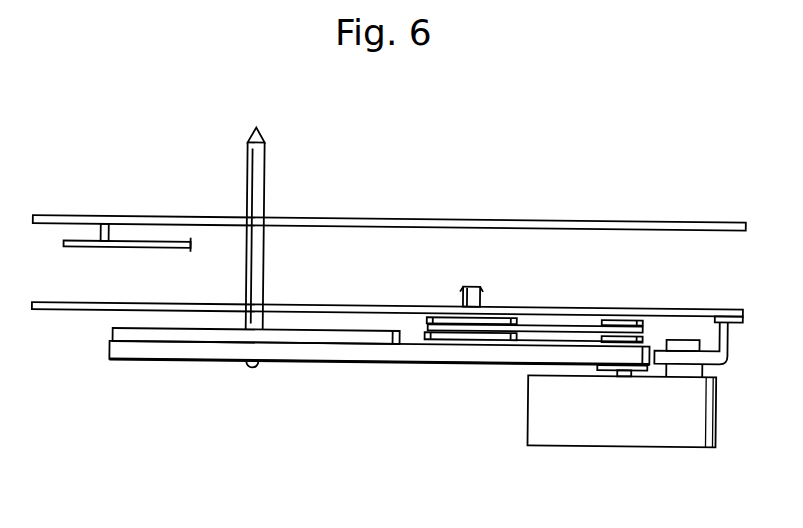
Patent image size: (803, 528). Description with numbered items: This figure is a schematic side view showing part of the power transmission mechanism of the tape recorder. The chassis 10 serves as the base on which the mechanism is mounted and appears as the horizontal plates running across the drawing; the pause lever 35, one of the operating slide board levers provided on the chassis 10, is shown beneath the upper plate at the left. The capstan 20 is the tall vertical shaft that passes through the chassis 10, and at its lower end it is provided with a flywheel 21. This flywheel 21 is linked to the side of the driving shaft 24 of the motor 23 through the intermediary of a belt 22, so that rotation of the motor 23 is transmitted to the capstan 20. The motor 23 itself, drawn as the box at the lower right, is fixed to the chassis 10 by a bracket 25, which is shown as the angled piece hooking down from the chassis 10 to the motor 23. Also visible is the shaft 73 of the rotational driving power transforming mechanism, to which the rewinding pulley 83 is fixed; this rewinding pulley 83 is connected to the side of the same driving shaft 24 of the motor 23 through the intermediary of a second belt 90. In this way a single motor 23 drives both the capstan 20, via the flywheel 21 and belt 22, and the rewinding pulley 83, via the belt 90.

The chassis 10 is at (87, 220).
The capstan 20 is at (262, 198).
The flywheel 21 is at (120, 330).
The belt 22 is at (438, 365).
The motor 23 is at (543, 412).
The driving shaft 24 is at (618, 320).
The bracket 25 is at (716, 337).
The pause lever 35 is at (94, 252).
The shaft 73 is at (467, 294).
The rewinding pulley 83 is at (414, 318).
The belt 90 is at (531, 318).